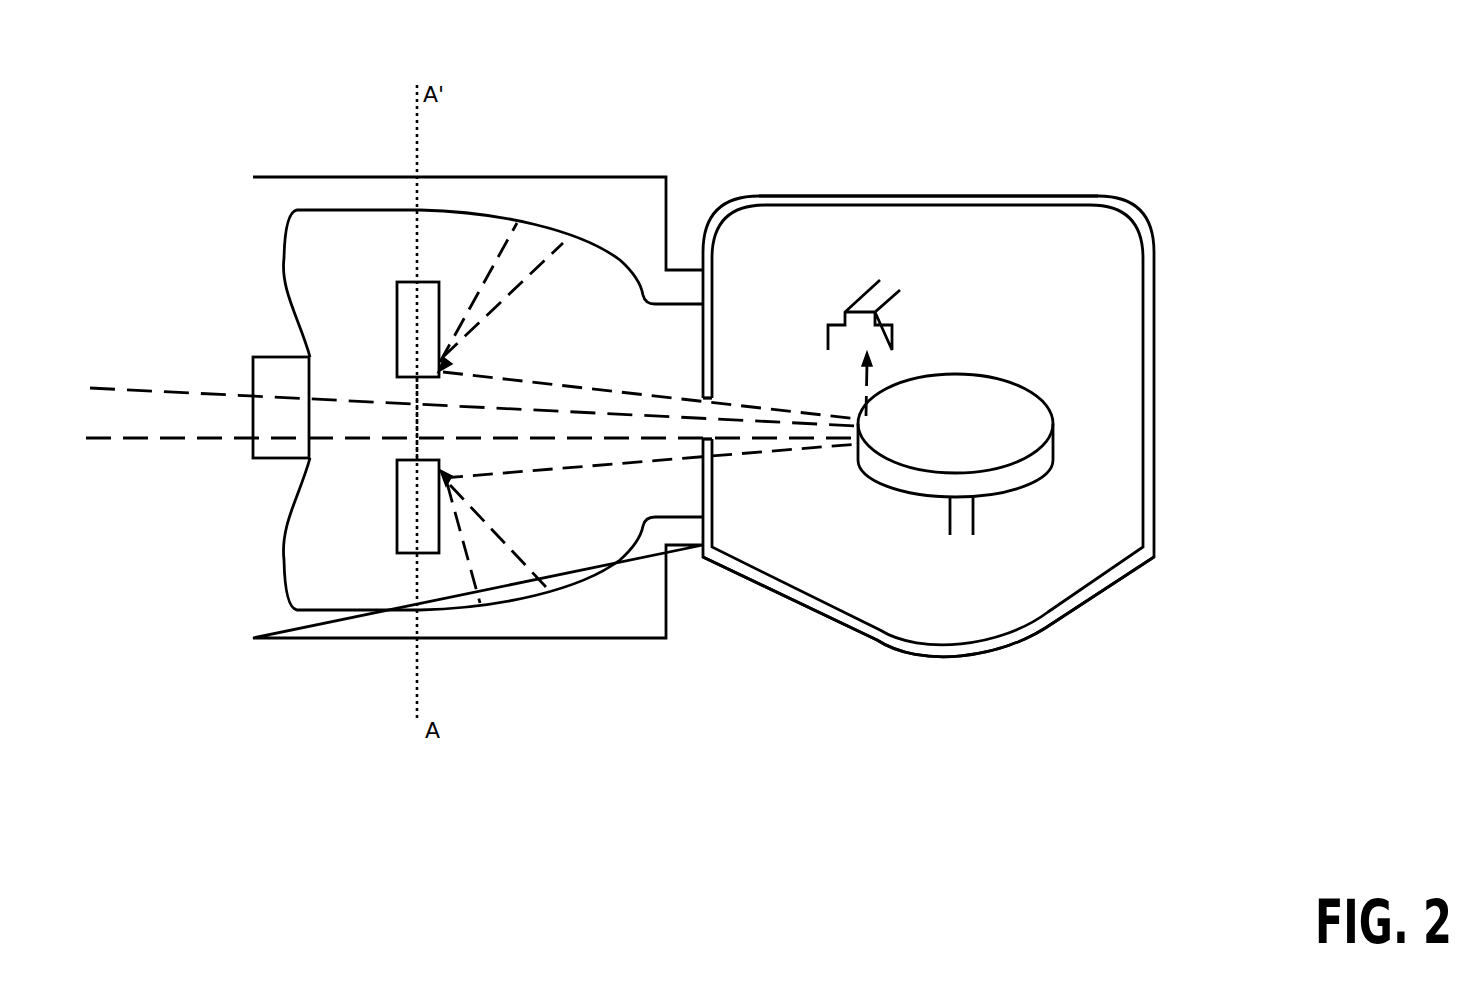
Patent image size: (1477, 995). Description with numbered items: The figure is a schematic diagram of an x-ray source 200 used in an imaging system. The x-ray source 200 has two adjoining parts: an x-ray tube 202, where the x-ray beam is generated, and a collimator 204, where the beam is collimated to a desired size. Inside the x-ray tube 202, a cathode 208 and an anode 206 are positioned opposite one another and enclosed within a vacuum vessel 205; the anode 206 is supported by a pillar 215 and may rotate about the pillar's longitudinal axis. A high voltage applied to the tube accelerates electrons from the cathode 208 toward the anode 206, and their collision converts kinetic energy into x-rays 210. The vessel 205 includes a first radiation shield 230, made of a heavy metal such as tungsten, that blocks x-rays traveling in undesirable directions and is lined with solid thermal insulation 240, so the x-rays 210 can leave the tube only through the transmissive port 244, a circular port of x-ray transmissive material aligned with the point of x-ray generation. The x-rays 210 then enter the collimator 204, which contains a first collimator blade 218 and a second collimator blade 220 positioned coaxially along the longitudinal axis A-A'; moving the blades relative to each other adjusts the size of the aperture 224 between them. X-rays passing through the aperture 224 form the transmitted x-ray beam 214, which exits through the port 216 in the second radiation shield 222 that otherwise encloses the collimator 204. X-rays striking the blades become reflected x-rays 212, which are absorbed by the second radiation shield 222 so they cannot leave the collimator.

The x-ray source 200 is at (1204, 104).
The x-ray tube 202 is at (1166, 326).
The collimator 204 is at (556, 159).
The vacuum vessel 205 is at (1053, 627).
The anode 206 is at (1012, 380).
The cathode 208 is at (893, 343).
The x-rays 210 is at (767, 457).
The reflected x-rays 212 is at (510, 543).
The transmitted x-ray beam 214 is at (217, 440).
The pillar 215 is at (975, 510).
The port 216 is at (263, 387).
The first collimator blade 218 is at (397, 283).
The second collimator blade 220 is at (397, 522).
The second radiation shield 222 is at (305, 205).
The aperture 224 is at (403, 390).
The first radiation shield 230 is at (983, 195).
The solid thermal insulation 240 is at (872, 207).
The transmissive port 244 is at (708, 412).